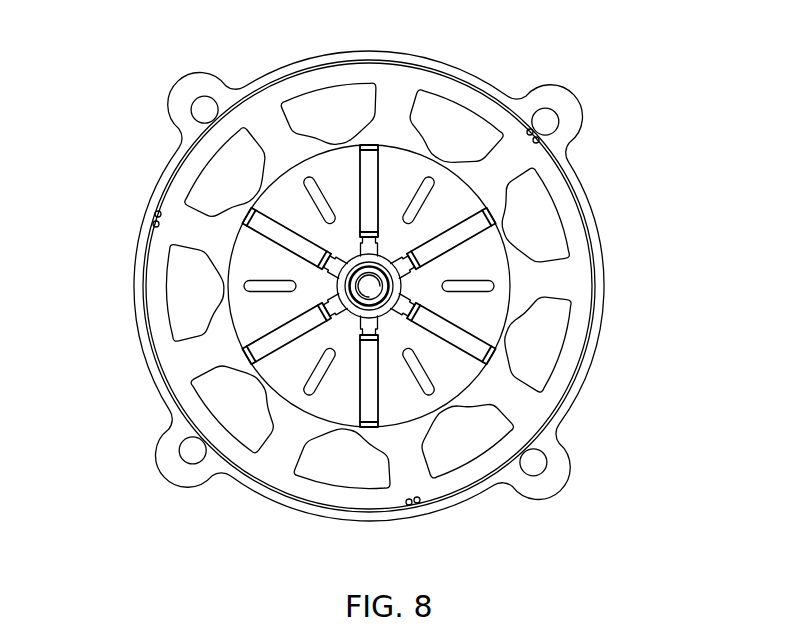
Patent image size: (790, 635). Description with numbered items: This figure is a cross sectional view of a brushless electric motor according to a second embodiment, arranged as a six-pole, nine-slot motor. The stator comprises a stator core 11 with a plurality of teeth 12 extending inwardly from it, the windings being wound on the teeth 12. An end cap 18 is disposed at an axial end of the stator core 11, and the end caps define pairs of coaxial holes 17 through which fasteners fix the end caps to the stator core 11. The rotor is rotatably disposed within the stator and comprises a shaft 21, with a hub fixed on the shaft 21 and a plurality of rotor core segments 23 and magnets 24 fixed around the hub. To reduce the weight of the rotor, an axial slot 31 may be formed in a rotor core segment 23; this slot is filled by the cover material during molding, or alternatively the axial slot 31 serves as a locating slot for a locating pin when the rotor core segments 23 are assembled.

The stator core 11 is at (153, 273).
The teeth 12 is at (193, 230).
The coaxial holes 17 is at (548, 122).
The end cap 18 is at (297, 62).
The shaft 21 is at (370, 286).
The rotor core segments 23 is at (408, 173).
The magnets 24 is at (463, 341).
The axial slot 31 is at (250, 288).